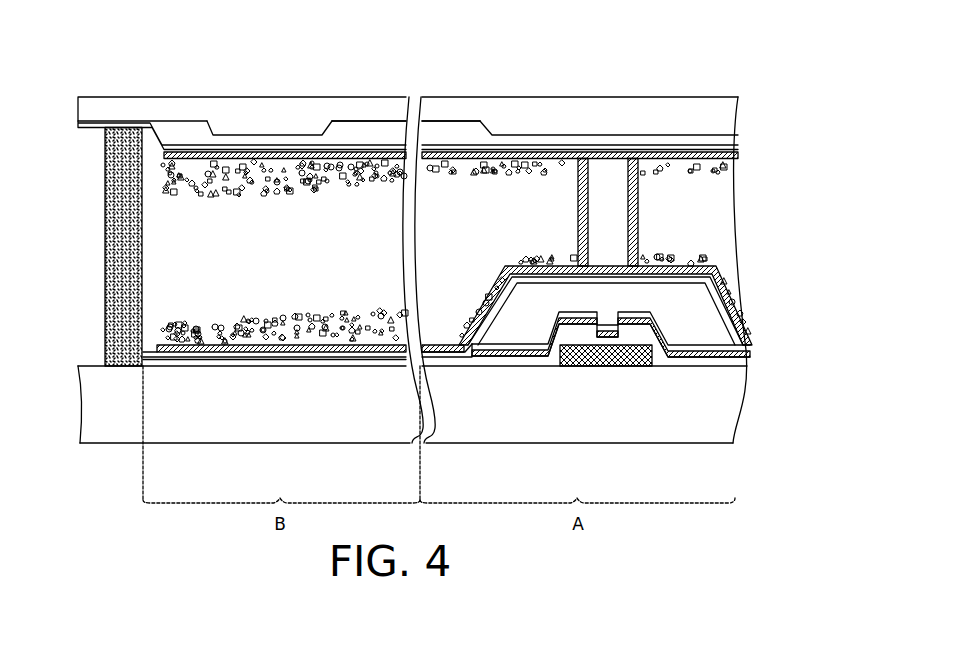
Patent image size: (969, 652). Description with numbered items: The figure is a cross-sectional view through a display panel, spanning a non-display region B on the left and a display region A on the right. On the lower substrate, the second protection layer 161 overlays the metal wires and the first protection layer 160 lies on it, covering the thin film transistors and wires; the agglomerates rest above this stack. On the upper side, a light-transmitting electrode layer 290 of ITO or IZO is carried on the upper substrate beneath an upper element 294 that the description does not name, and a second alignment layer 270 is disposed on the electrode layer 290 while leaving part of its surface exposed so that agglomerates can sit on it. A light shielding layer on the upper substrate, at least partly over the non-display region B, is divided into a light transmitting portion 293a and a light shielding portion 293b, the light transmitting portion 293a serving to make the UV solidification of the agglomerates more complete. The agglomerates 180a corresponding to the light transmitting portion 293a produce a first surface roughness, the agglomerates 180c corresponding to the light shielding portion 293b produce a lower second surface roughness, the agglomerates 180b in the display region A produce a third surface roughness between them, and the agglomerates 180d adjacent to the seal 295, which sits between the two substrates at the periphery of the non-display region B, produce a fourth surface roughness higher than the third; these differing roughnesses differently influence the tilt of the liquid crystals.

The first protection layer 160 is at (157, 350).
The second protection layer 161 is at (157, 358).
The agglomerates corresponding to the light transmitting portion 180a is at (345, 167).
The agglomerates corresponding to the display region 180b is at (472, 162).
The agglomerates corresponding to the light shielding portion 180c is at (260, 157).
The agglomerates adjacent to the seal 180d is at (163, 167).
The second alignment layer 270 is at (735, 157).
The electrode layer 290 is at (78, 124).
The light transmitting portion 293a is at (376, 110).
The light shielding portion 293b is at (311, 110).
The upper substrate 294 is at (192, 128).
The seal 295 is at (108, 257).